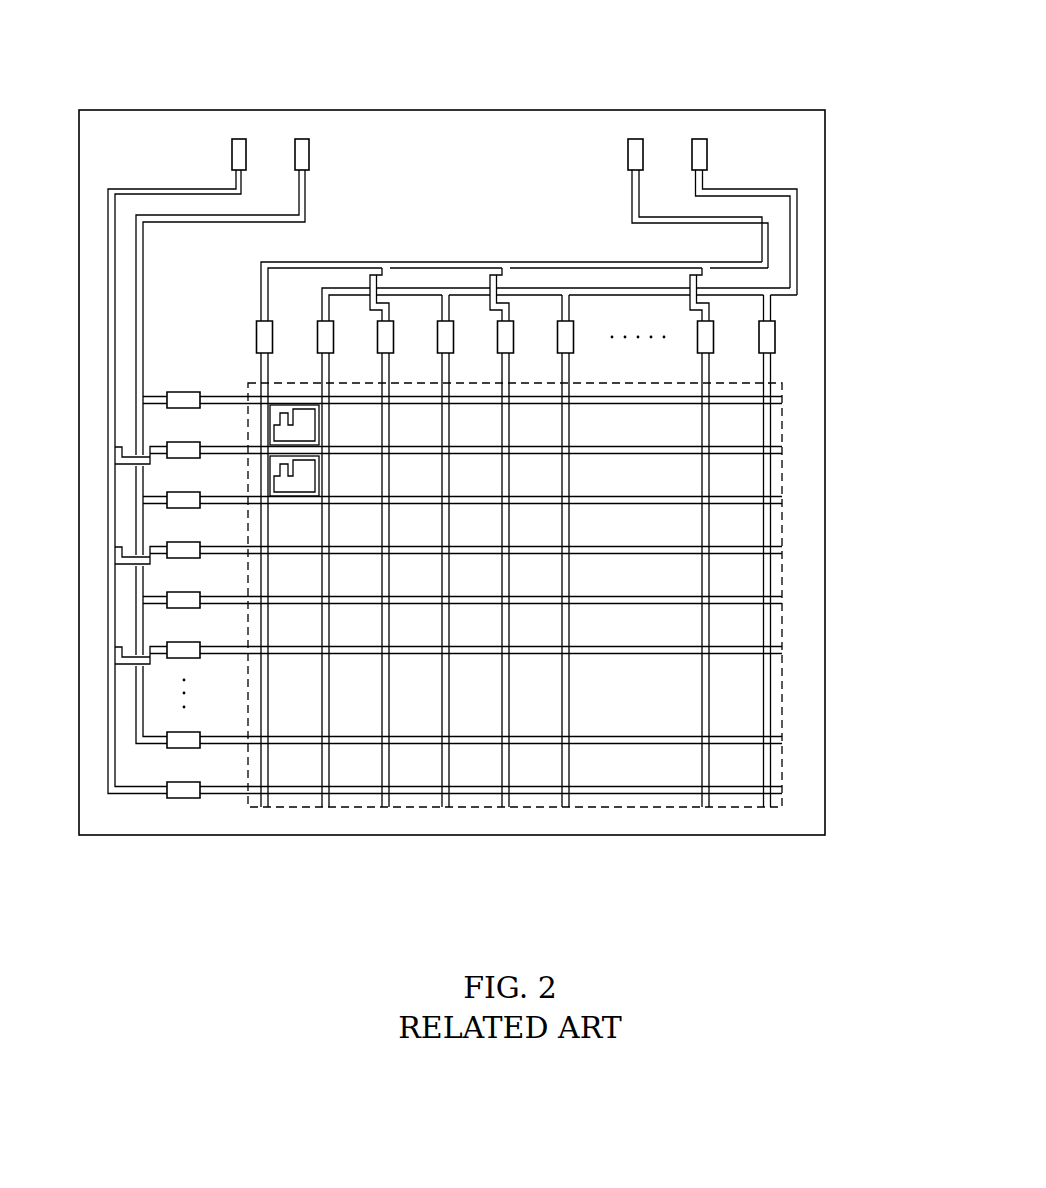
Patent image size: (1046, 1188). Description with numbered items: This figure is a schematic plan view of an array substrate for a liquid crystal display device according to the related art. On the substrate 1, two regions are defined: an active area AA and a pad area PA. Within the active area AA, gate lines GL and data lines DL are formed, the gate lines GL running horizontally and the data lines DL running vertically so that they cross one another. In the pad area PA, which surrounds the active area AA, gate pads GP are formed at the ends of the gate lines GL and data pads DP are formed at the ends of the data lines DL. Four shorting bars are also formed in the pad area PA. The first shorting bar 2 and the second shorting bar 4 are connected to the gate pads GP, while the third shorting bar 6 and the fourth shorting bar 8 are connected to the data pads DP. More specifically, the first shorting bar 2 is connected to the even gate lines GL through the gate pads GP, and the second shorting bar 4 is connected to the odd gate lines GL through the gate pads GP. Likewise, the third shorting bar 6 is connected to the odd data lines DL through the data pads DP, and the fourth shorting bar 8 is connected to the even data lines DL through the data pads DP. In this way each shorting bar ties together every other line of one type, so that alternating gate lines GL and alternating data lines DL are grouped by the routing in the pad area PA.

The substrate 1 is at (826, 385).
The first shorting bar 2 is at (240, 150).
The second shorting bar 4 is at (306, 148).
The third shorting bar 6 is at (630, 150).
The fourth shorting bar 8 is at (697, 150).
The pad area PA is at (444, 171).
The data pads DP is at (775, 334).
The gate pads GP is at (174, 796).
The gate lines GL is at (592, 403).
The data lines DL is at (568, 480).
The active area AA is at (777, 704).